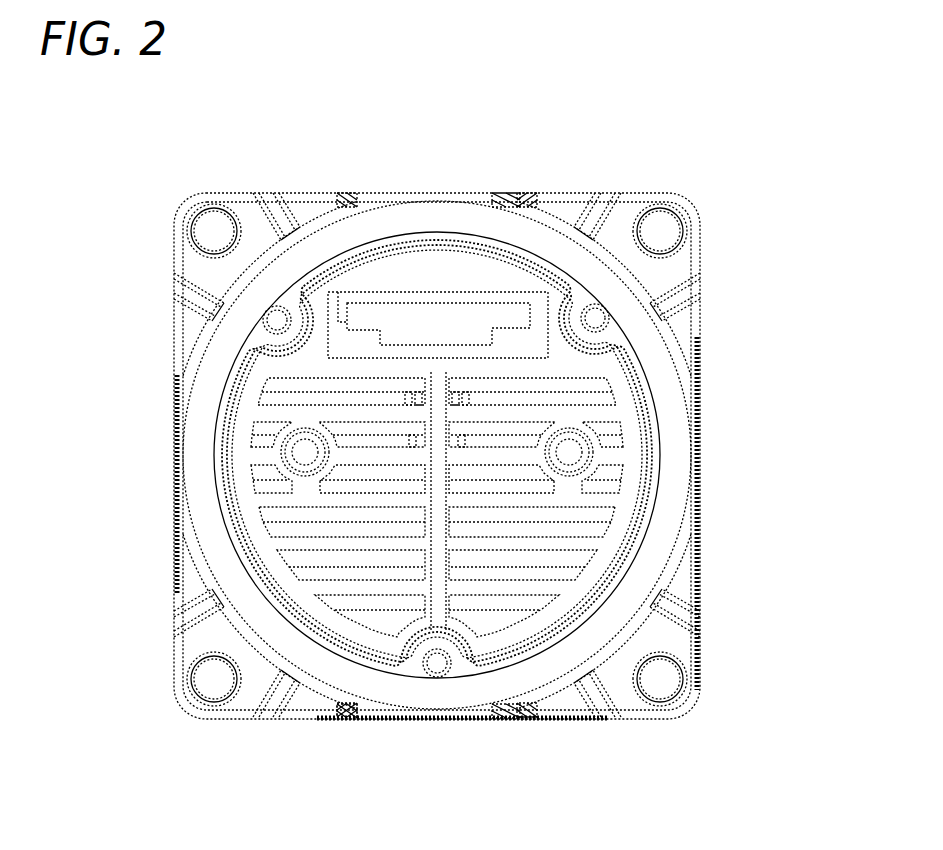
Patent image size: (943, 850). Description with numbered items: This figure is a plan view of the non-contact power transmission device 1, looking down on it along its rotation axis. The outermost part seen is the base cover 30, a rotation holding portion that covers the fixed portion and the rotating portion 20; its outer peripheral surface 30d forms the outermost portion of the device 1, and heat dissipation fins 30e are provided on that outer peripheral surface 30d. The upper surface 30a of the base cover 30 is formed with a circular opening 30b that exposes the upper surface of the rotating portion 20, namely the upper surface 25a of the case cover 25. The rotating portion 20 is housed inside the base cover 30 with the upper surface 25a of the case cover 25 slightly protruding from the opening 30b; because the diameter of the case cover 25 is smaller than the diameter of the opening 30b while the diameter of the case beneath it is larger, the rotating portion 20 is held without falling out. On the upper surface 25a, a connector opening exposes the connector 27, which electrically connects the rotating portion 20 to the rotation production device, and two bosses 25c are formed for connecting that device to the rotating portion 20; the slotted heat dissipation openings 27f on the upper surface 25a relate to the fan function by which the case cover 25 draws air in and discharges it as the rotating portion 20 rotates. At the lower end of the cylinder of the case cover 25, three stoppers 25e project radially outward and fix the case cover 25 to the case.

The non-contact power transmission device 1 is at (670, 140).
The rotating portion 20 is at (640, 545).
The case cover 25 is at (632, 455).
The upper surface of the case cover 25a is at (402, 268).
The boss 25c is at (207, 393).
The stopper 25e is at (437, 687).
The connector 27 is at (462, 290).
The grille slats 27f is at (323, 560).
The base cover 30 is at (668, 392).
The upper surface of the base cover 30a is at (620, 300).
The opening 30b is at (620, 522).
The outer peripheral surface of the base cover 30d is at (638, 640).
The heat dissipation fin 30e is at (180, 318).